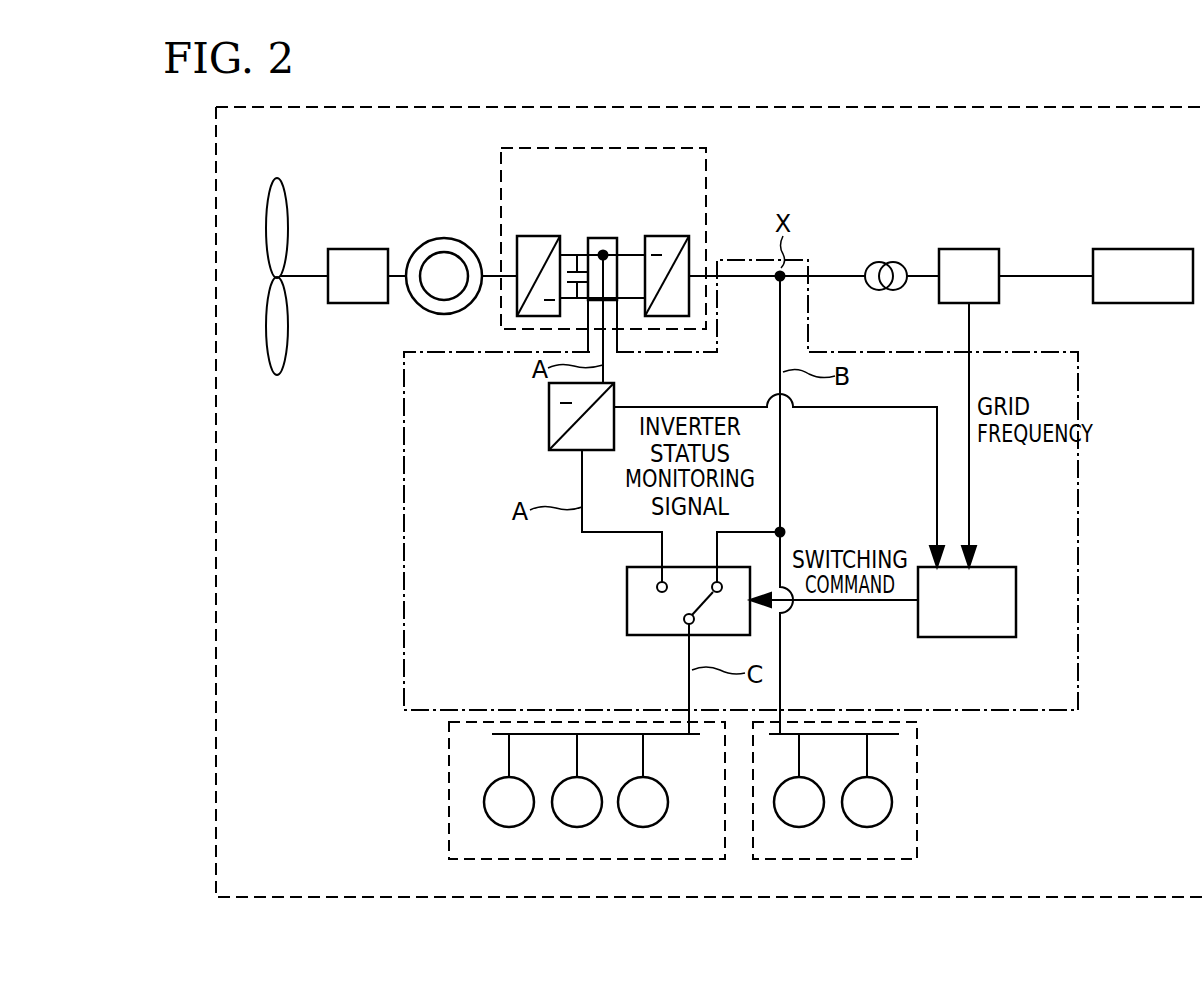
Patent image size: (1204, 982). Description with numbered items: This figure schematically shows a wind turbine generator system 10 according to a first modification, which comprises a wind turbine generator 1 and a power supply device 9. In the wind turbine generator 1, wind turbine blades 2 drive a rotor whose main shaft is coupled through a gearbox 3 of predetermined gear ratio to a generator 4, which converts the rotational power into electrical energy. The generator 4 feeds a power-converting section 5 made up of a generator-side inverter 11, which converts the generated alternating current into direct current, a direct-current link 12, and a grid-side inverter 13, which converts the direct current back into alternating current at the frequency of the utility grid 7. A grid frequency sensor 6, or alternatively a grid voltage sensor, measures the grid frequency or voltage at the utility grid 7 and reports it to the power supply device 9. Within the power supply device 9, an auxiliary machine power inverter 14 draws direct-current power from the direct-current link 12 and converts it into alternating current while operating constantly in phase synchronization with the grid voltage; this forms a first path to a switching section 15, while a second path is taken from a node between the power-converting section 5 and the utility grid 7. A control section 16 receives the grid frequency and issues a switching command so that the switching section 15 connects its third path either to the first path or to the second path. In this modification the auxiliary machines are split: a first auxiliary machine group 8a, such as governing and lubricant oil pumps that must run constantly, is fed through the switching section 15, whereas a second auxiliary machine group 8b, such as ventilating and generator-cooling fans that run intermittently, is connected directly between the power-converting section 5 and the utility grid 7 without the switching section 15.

The wind turbine generator 1 is at (870, 188).
The wind turbine blades 2 is at (278, 180).
The gearbox 3 is at (362, 249).
The generator 4 is at (444, 238).
The power-converting section 5 is at (706, 166).
The grid frequency sensor 6 is at (972, 248).
The utility grid 7 is at (1148, 305).
The first auxiliary machine group 8a is at (449, 803).
The second auxiliary machine group 8b is at (917, 790).
The power supply device 9 is at (1078, 518).
The wind turbine generator system 10 is at (695, 107).
The generator-side inverter 11 is at (535, 235).
The direct-current link 12 is at (629, 254).
The grid-side inverter 13 is at (670, 236).
The auxiliary machine power inverter 14 is at (549, 415).
The switching section 15 is at (627, 600).
The control section 16 is at (968, 640).